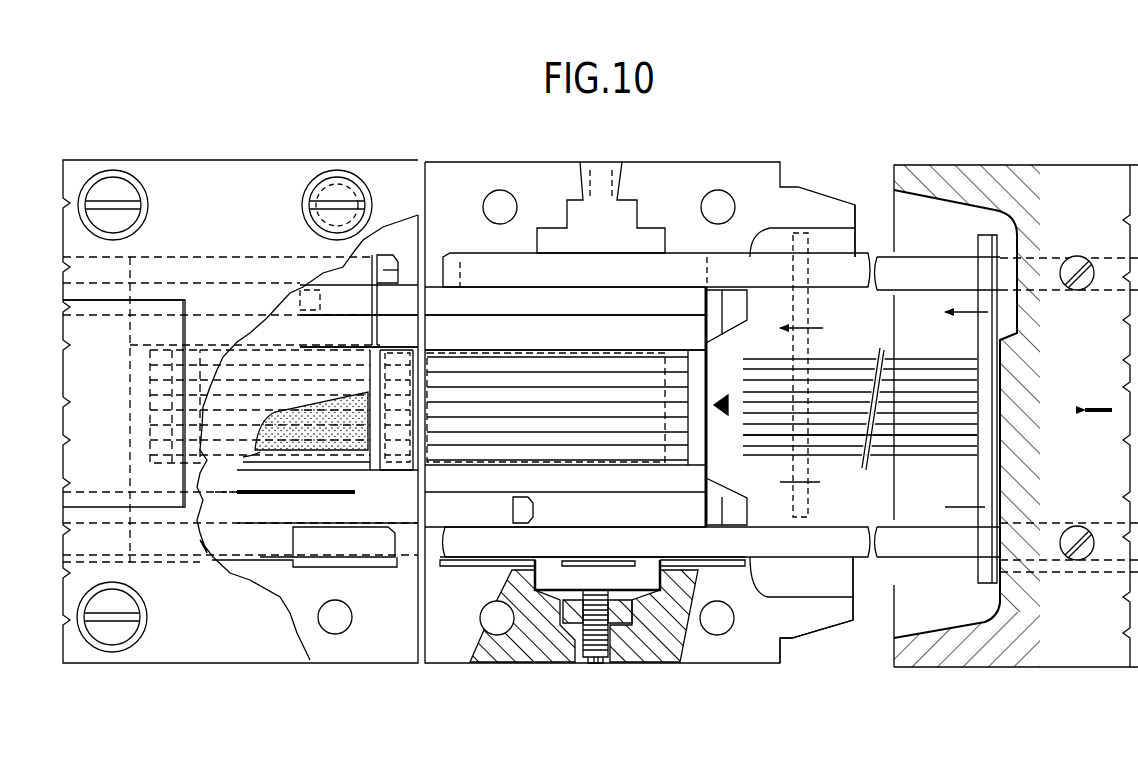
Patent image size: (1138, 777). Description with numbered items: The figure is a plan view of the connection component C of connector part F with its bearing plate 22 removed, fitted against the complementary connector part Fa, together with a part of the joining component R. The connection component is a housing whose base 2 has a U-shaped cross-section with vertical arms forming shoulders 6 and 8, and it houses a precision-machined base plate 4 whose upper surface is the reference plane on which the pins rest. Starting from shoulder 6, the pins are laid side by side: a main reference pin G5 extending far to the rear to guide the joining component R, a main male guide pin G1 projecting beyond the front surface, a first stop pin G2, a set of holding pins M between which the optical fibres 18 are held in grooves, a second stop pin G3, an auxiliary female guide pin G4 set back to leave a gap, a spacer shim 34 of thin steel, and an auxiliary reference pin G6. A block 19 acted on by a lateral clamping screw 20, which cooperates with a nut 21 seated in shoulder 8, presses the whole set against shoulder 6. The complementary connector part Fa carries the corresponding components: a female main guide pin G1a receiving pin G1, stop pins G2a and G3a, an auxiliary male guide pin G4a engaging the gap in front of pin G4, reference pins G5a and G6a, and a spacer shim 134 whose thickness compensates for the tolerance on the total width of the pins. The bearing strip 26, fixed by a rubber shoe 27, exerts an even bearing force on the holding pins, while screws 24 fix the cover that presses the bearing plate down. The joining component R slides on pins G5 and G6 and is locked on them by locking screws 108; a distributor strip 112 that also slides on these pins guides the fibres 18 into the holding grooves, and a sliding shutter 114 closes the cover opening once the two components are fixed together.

The base 2 is at (725, 158).
The base plate 4 is at (715, 380).
The shoulder 6 is at (553, 240).
The shoulder 8 is at (660, 580).
The optical fibres 18 is at (918, 438).
The block 19 is at (640, 630).
The lateral clamping screw 20 is at (600, 663).
The nut 21 is at (580, 590).
The bearing plate 22 is at (213, 320).
The screws 24 is at (108, 188).
The bearing strip 26 is at (360, 420).
The rubber shoe 27 is at (308, 432).
The spacer shim 34 is at (555, 600).
The locking screws 108 is at (1072, 260).
The distributor strip 112 is at (812, 250).
The sliding shutter 114 is at (100, 465).
The spacer shim 134 is at (262, 498).
The complementary connector part Fa is at (236, 155).
The connection component C is at (460, 158).
The connector part F is at (862, 135).
The joining component R is at (1078, 160).
The holding pins M is at (680, 418).
The main male guide pin G1 is at (515, 300).
The first stop pin G2 is at (688, 330).
The second stop pin G3 is at (495, 480).
The auxiliary female guide pin G4 is at (690, 560).
The main reference pin G5 is at (780, 262).
The auxiliary reference pin G6 is at (775, 570).
The female main guide pin G1a is at (290, 285).
The first stop pin G2a is at (395, 335).
The second stop pin G3a is at (280, 483).
The auxiliary male guide pin G4a is at (307, 515).
The main reference pin G5a is at (392, 255).
The auxiliary reference pin G6a is at (362, 545).